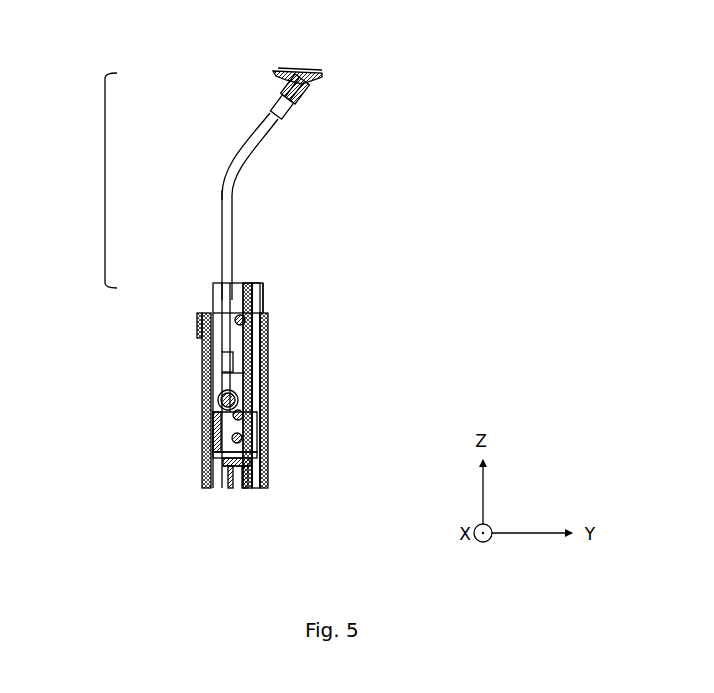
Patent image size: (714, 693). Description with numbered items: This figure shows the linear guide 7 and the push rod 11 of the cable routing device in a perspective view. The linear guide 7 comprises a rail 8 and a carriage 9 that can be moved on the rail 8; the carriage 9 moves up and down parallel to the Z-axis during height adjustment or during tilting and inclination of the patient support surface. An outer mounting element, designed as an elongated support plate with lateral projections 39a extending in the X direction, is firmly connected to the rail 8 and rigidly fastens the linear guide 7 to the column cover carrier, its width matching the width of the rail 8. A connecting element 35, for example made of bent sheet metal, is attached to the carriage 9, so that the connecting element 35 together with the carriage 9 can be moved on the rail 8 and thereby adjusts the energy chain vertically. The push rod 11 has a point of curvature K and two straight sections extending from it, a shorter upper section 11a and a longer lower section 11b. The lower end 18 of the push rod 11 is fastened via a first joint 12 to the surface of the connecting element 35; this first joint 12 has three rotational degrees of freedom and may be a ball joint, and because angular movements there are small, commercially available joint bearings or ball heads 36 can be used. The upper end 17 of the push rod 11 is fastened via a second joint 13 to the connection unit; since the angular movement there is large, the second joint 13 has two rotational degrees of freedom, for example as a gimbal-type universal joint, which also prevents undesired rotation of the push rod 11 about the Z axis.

The linear guide 7 is at (290, 312).
The rail 8 is at (242, 473).
The carriage 9 is at (212, 454).
The push rod 11 is at (105, 179).
The upper section 11a is at (253, 138).
The lower section 11b is at (220, 267).
The first joint 12 is at (218, 396).
The second joint 13 is at (281, 76).
The upper end 17 is at (317, 89).
The lower end 18 is at (252, 397).
The connecting element 35 is at (252, 442).
The ball head 36 is at (246, 375).
The lateral projections 39a is at (263, 418).
The point of curvature K is at (211, 179).